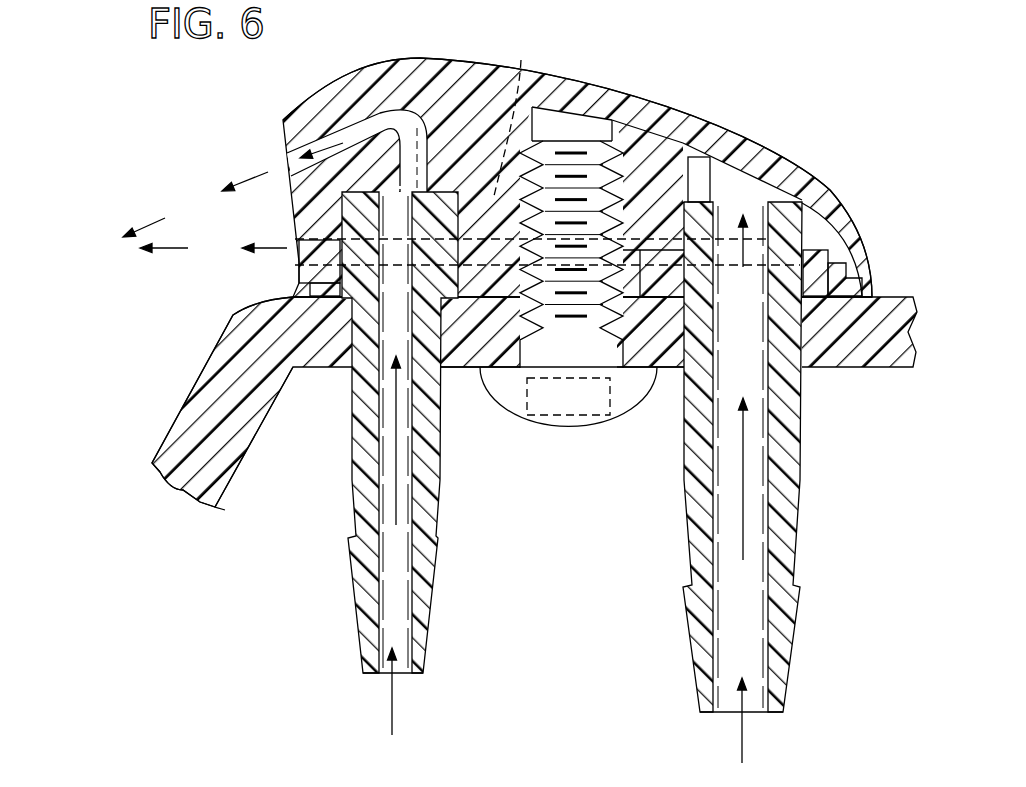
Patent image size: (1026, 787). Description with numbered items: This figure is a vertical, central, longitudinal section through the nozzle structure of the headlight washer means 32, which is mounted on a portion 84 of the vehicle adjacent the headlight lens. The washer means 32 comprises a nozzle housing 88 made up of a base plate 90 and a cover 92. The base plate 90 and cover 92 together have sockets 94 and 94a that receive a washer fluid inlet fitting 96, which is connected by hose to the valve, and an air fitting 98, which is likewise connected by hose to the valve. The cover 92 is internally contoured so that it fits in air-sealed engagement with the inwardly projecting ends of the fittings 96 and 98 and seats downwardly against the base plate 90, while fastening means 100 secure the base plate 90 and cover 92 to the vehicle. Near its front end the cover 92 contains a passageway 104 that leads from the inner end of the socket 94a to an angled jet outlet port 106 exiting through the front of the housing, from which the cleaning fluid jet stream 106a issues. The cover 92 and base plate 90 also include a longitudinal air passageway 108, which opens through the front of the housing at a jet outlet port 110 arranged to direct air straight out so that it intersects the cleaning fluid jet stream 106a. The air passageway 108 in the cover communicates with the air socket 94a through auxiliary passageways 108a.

The headlight washer means 32 is at (755, 116).
The portion of the vehicle 84 is at (218, 432).
The nozzle housing 88 is at (374, 60).
The base plate 90 is at (862, 250).
The cover 92 is at (660, 118).
The socket 94 is at (293, 258).
The socket 94a is at (469, 368).
The washer fluid inlet fitting 96 is at (418, 470).
The air fitting 98 is at (788, 451).
The fastening means 100 is at (622, 402).
The passageway 104 is at (440, 116).
The angled jet outlet port 106 is at (285, 166).
The cleaning fluid jet stream 106a is at (142, 230).
The longitudinal passageway 108 is at (518, 116).
The auxiliary passageways 108a is at (733, 178).
The jet outlet port 110 is at (295, 222).